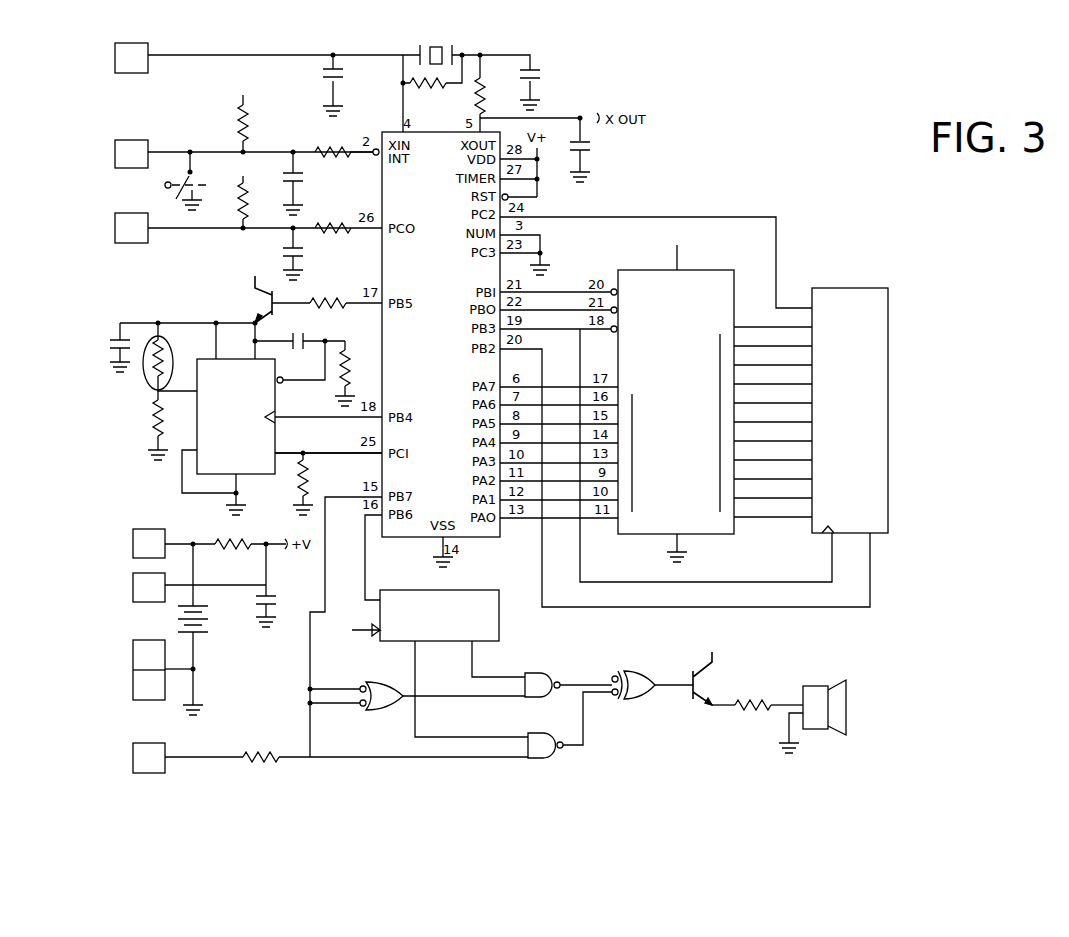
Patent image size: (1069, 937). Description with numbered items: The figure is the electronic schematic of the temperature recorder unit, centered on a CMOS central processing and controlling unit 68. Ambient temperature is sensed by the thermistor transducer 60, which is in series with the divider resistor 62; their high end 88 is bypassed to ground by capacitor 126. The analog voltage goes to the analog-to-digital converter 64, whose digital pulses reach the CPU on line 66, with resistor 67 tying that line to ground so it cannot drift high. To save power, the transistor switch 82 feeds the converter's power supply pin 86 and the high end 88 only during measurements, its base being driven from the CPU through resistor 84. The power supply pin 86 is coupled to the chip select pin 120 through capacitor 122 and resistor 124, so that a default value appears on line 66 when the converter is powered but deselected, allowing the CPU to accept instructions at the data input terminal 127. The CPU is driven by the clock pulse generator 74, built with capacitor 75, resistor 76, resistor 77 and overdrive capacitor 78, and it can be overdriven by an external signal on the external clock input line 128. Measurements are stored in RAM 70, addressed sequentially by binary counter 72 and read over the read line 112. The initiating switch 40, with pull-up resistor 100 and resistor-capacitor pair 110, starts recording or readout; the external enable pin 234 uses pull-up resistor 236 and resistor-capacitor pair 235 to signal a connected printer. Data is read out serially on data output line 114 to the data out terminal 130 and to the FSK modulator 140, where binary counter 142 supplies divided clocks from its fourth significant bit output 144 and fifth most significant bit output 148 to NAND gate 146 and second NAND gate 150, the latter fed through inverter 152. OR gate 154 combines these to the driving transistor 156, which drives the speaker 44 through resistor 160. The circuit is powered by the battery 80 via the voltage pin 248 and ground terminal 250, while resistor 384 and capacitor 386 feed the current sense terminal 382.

The external clock input line 128 is at (102, 43).
The data input terminal 127 is at (130, 140).
The initiating switch 40 is at (92, 187).
The external enable pin 234 is at (143, 243).
The pull-up resistor 100 is at (250, 124).
The resistor-capacitor pair 110 is at (326, 156).
The pull-up resistor 236 is at (248, 206).
The resistor-capacitor pair 235 is at (328, 234).
The overdrive capacitor 78 is at (341, 64).
The clock pulse generator 74 is at (456, 50).
The resistor 76 is at (483, 82).
The resistor 77 is at (432, 86).
The capacitor 75 is at (538, 64).
The high end of the transducer 88 is at (158, 322).
The transistor switch 82 is at (262, 293).
The power supply pin 86 is at (242, 342).
The resistor 84 is at (311, 302).
The capacitor 122 is at (310, 332).
The resistor 124 is at (345, 341).
The capacitor 126 is at (108, 348).
The transducer 60 is at (106, 378).
The divider resistor 62 is at (108, 422).
The chip select pin 120 is at (288, 388).
The line 66 is at (320, 452).
The resistor 67 is at (310, 466).
The analog-to-digital converter 64 is at (270, 474).
The recorder unit voltage pin 248 is at (138, 529).
The resistor 384 is at (218, 542).
The capacitor 386 is at (266, 590).
The current sense terminal 382 is at (133, 602).
The battery 80 is at (204, 630).
The recorder unit ground terminal 250 is at (133, 646).
The data out terminal 130 is at (140, 743).
The data output line 114 is at (312, 629).
The binary counter 142 is at (482, 590).
The fourth significant bit output 144 is at (380, 641).
The fifth most significant bit output 148 is at (510, 651).
The second NAND gate 150 is at (544, 672).
The frequency-shift keyed modulator 140 is at (598, 648).
The inverter 152 is at (386, 710).
The NAND gate 146 is at (564, 756).
The OR gate 154 is at (632, 700).
The driving transistor 156 is at (716, 664).
The resistor 160 is at (750, 712).
The speaker 44 is at (812, 686).
The RAM 70 is at (719, 270).
The binary counter 72 is at (852, 288).
The central processing and controlling unit 68 is at (518, 282).
The read line 112 is at (580, 268).